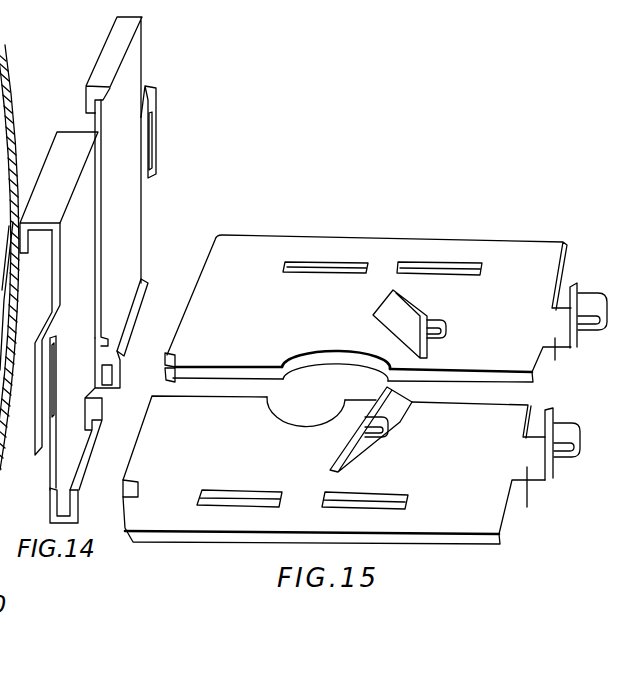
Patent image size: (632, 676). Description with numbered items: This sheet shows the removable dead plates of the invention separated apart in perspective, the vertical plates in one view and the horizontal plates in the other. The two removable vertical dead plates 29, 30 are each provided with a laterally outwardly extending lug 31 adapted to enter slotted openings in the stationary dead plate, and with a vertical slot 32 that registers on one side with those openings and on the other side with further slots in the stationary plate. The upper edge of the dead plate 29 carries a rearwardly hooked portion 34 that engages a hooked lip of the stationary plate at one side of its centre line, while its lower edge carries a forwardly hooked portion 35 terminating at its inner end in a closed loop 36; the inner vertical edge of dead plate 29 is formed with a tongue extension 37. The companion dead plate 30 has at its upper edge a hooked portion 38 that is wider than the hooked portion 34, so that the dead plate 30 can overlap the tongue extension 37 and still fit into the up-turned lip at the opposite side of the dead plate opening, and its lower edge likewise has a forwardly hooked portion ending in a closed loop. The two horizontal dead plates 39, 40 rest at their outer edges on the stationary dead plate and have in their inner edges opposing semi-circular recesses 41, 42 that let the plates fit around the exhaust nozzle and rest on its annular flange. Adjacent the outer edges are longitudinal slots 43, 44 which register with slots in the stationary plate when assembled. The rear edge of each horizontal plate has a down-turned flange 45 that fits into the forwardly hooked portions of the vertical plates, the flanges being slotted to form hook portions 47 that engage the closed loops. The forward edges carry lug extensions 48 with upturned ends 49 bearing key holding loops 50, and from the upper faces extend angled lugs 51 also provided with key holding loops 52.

In FIG. 14, the removable vertical dead plate 29 is at (125, 213).
In FIG. 14, the removable vertical dead plate 30 is at (77, 285).
In FIG. 14, the lug 31 is at (154, 101).
In FIG. 14, the vertical slot 32 is at (153, 137).
In FIG. 14, the rearwardly hooked portion 34 is at (115, 51).
In FIG. 14, the forwardly hooked portion 35 is at (135, 295).
In FIG. 14, the closed loop 36 is at (120, 352).
In FIG. 14, the tongue extension 37 is at (97, 126).
In FIG. 14, the hooked portion 38 is at (56, 147).
In FIG. 15, the horizontal dead plate 39 is at (500, 323).
In FIG. 15, the horizontal dead plate 40 is at (460, 463).
In FIG. 15, the semi-circular recess 41 is at (340, 343).
In FIG. 15, the semi-circular recess 42 is at (303, 428).
In FIG. 15, the longitudinal slot 43 is at (335, 265).
In FIG. 15, the longitudinal slot 44 is at (453, 262).
In FIG. 15, the down-turned flange 45 is at (174, 358).
In FIG. 15, the hook portion 47 is at (168, 385).
In FIG. 15, the lug extension 48 is at (548, 438).
In FIG. 15, the upturned end 49 is at (582, 284).
In FIG. 15, the key holding loop 50 is at (603, 306).
In FIG. 15, the lug 51 is at (436, 344).
In FIG. 15, the key holding loop 52 is at (422, 465).